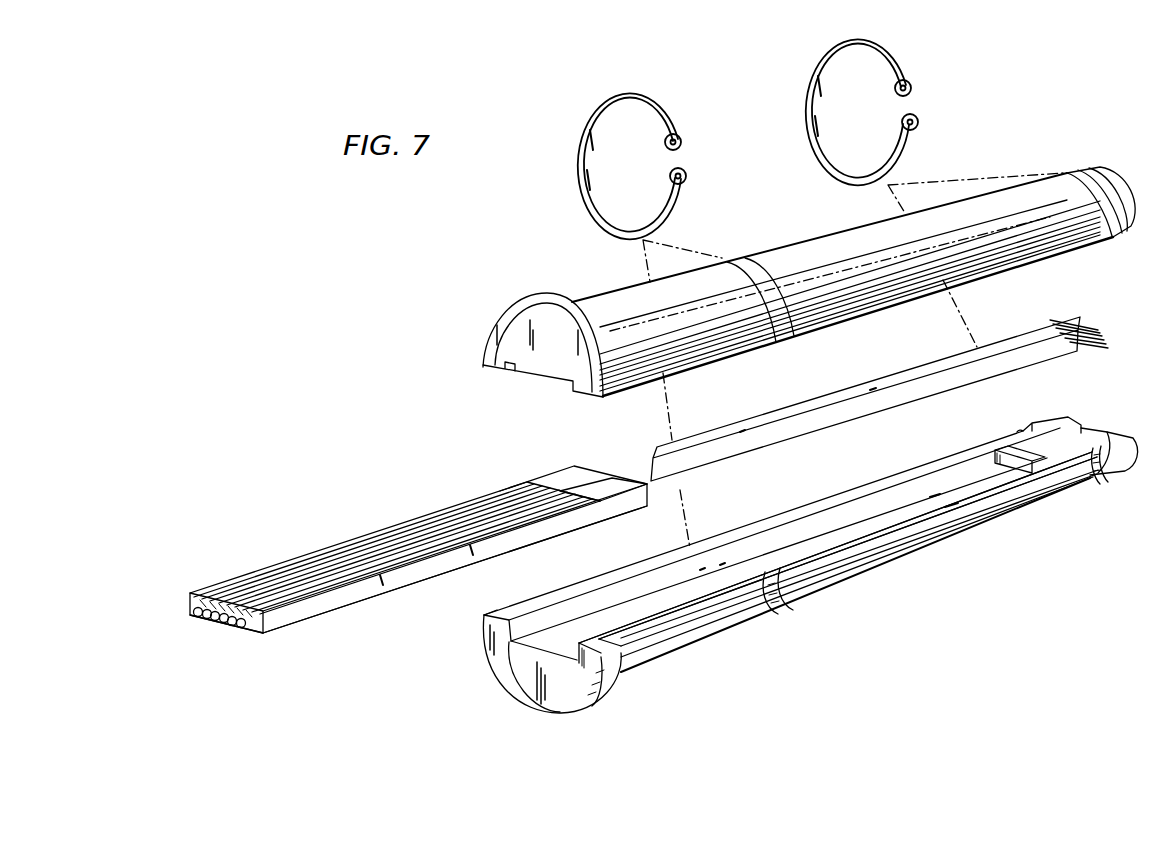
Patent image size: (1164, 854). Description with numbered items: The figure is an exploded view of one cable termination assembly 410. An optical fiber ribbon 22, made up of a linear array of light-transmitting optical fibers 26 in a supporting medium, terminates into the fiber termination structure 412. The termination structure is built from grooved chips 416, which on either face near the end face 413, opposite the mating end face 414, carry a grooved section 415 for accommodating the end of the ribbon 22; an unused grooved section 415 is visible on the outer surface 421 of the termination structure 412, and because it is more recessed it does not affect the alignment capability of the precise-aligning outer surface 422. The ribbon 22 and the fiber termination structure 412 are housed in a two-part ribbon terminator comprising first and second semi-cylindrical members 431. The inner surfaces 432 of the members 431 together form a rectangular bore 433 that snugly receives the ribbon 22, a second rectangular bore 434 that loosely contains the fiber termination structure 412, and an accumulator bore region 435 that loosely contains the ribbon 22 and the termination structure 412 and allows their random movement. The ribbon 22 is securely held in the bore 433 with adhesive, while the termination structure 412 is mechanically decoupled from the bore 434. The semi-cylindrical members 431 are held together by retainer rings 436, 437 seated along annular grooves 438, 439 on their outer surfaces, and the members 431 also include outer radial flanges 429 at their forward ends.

The cable termination assembly 410 is at (889, 673).
The fiber termination structure 412 is at (310, 620).
The end face 413 is at (593, 470).
The mating end face 414 is at (190, 601).
The grooved section 415 is at (558, 490).
The grooved chips 416 is at (383, 593).
The outer surface 421 is at (370, 527).
The precise-aligning outer surface 422 is at (243, 573).
The optical fiber ribbon 22 is at (1048, 360).
The optical fibers 26 is at (1104, 340).
The outer radial flanges 429 is at (612, 397).
The semi-cylindrical members 431 is at (990, 190).
The inner surfaces 432 is at (985, 272).
The rectangular bore 433 is at (1146, 418).
The second rectangular bore 434 is at (507, 680).
The accumulator bore region 435 is at (800, 556).
The retainer ring 436 is at (655, 103).
The retainer ring 437 is at (891, 62).
The annular groove 438 is at (740, 256).
The annular groove 439 is at (1077, 155).